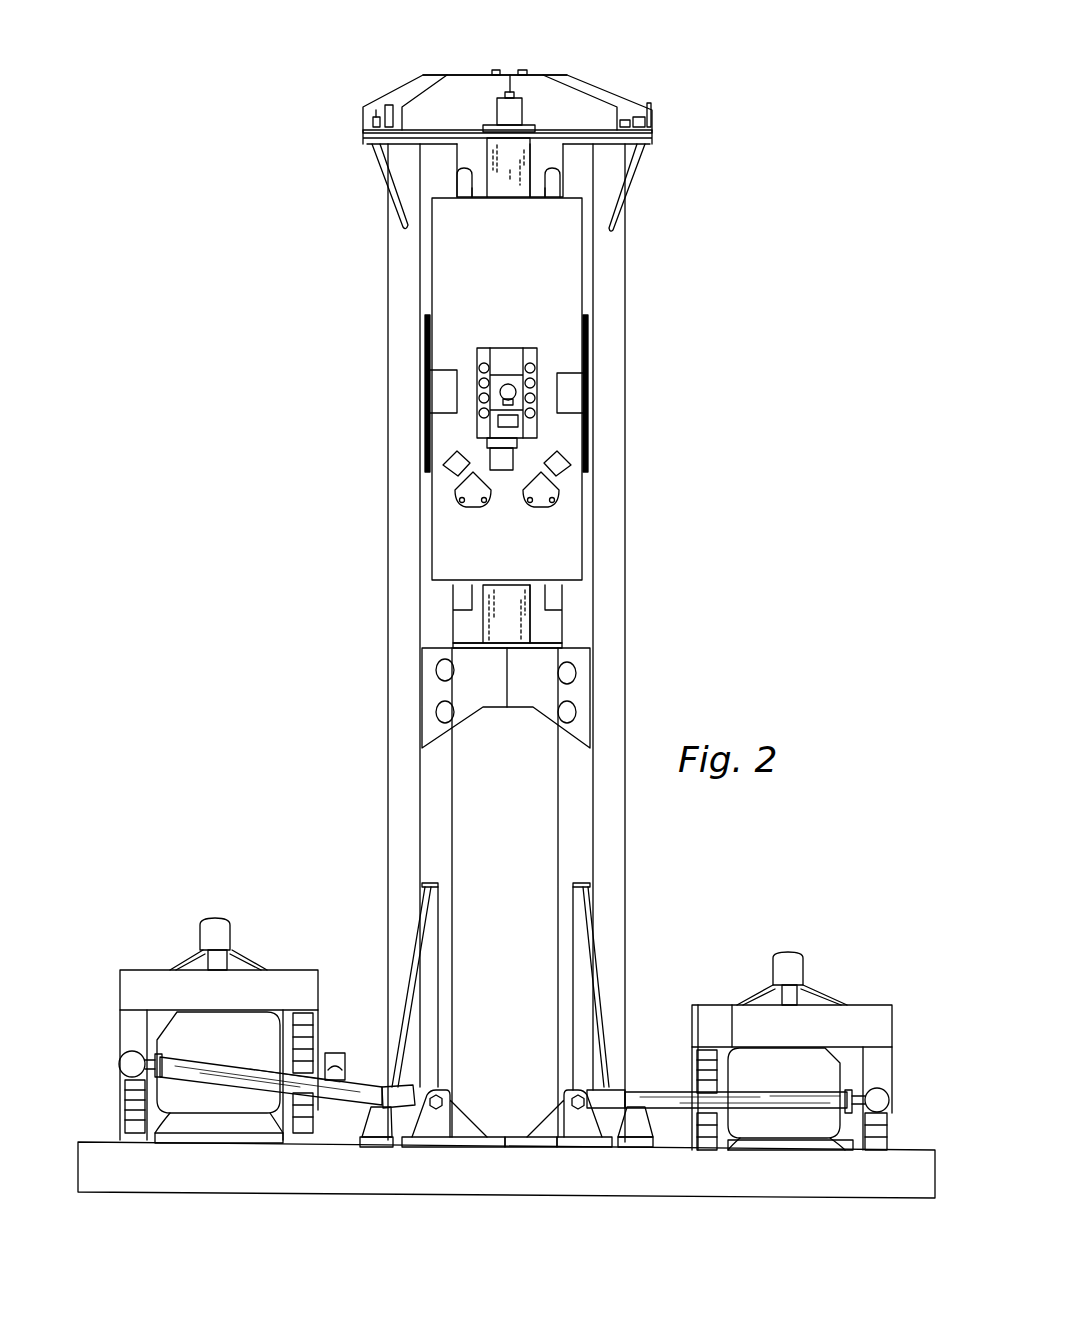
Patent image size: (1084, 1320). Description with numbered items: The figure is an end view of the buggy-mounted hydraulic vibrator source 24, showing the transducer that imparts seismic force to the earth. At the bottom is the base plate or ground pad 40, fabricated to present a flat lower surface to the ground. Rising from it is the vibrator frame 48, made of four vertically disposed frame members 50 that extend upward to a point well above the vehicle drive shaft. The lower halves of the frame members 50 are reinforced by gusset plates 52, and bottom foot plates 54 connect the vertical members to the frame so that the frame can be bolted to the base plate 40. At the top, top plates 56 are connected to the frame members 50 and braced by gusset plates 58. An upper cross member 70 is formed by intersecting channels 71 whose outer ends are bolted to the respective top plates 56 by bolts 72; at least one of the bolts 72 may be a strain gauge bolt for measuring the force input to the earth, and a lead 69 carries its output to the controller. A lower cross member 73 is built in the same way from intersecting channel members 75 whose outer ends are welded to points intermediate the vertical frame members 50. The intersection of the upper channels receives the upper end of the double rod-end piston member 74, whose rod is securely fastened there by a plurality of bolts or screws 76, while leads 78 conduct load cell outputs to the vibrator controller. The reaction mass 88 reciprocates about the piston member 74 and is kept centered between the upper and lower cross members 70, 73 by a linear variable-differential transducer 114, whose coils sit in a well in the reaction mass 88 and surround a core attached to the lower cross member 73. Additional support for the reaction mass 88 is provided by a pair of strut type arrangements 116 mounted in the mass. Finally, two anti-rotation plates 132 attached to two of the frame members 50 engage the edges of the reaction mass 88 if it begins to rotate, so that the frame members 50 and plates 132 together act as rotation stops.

The vibrator source 24 is at (500, 54).
The base plate 40 is at (508, 1188).
The vibrator frame 48 is at (659, 838).
The frame members 50 is at (397, 867).
The gusset plates 52 is at (418, 965).
The bottom foot plates 54 is at (373, 1143).
The top plates 56 is at (366, 141).
The gusset plates 58 is at (395, 172).
The lead 69 is at (365, 104).
The upper cross member 70 is at (540, 70).
The channels 71 is at (386, 108).
The bolts 72 is at (370, 118).
The lower cross member 73 is at (506, 714).
The double rod-end piston member 74 is at (518, 192).
The channel members 75 is at (435, 688).
The bolts or screws 76 is at (521, 69).
The leads 78 is at (536, 356).
The reaction mass 88 is at (513, 279).
The linear variable-differential transducer 114 is at (523, 110).
The strut type arrangement 116 is at (457, 183).
The anti-rotation plates 132 is at (440, 398).